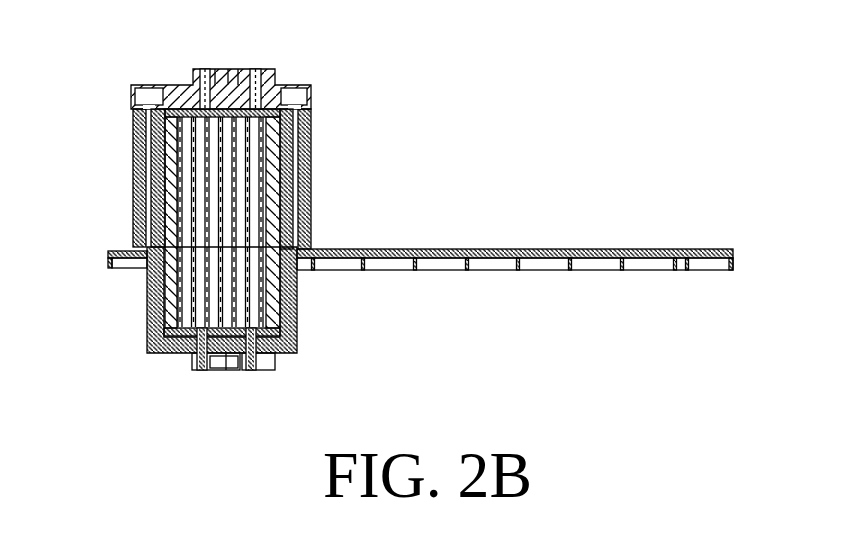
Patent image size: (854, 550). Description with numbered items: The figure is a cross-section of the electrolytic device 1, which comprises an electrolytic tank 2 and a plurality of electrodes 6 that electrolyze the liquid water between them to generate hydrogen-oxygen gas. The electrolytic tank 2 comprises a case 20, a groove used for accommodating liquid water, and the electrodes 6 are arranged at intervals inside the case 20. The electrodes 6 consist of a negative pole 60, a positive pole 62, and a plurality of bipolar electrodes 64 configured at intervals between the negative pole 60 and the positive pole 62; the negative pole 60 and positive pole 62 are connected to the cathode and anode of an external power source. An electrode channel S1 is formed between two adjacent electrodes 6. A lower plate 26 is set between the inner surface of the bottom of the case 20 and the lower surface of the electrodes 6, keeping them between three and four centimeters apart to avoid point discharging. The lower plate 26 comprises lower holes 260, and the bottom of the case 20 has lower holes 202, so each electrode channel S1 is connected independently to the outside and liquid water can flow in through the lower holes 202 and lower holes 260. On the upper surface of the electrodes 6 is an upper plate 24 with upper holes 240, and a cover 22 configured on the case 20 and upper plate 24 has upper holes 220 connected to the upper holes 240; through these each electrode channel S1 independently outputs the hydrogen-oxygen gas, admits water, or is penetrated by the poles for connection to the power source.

The electrolytic device 1 is at (663, 87).
The electrolytic tank 2 is at (135, 227).
The case 20 is at (148, 290).
The cover 22 is at (133, 107).
The upper plate 24 is at (170, 112).
The upper holes of the cover 220 is at (252, 76).
The upper holes of the upper plate 240 is at (238, 99).
The negative pole 60 is at (153, 175).
The positive pole 62 is at (281, 198).
The electrodes 6 is at (258, 289).
The electrode channel S1 is at (173, 315).
The lower holes of the lower plate 260 is at (192, 355).
The lower holes 202 is at (197, 370).
The bipolar electrodes 64 is at (227, 357).
The lower plate 26 is at (282, 355).